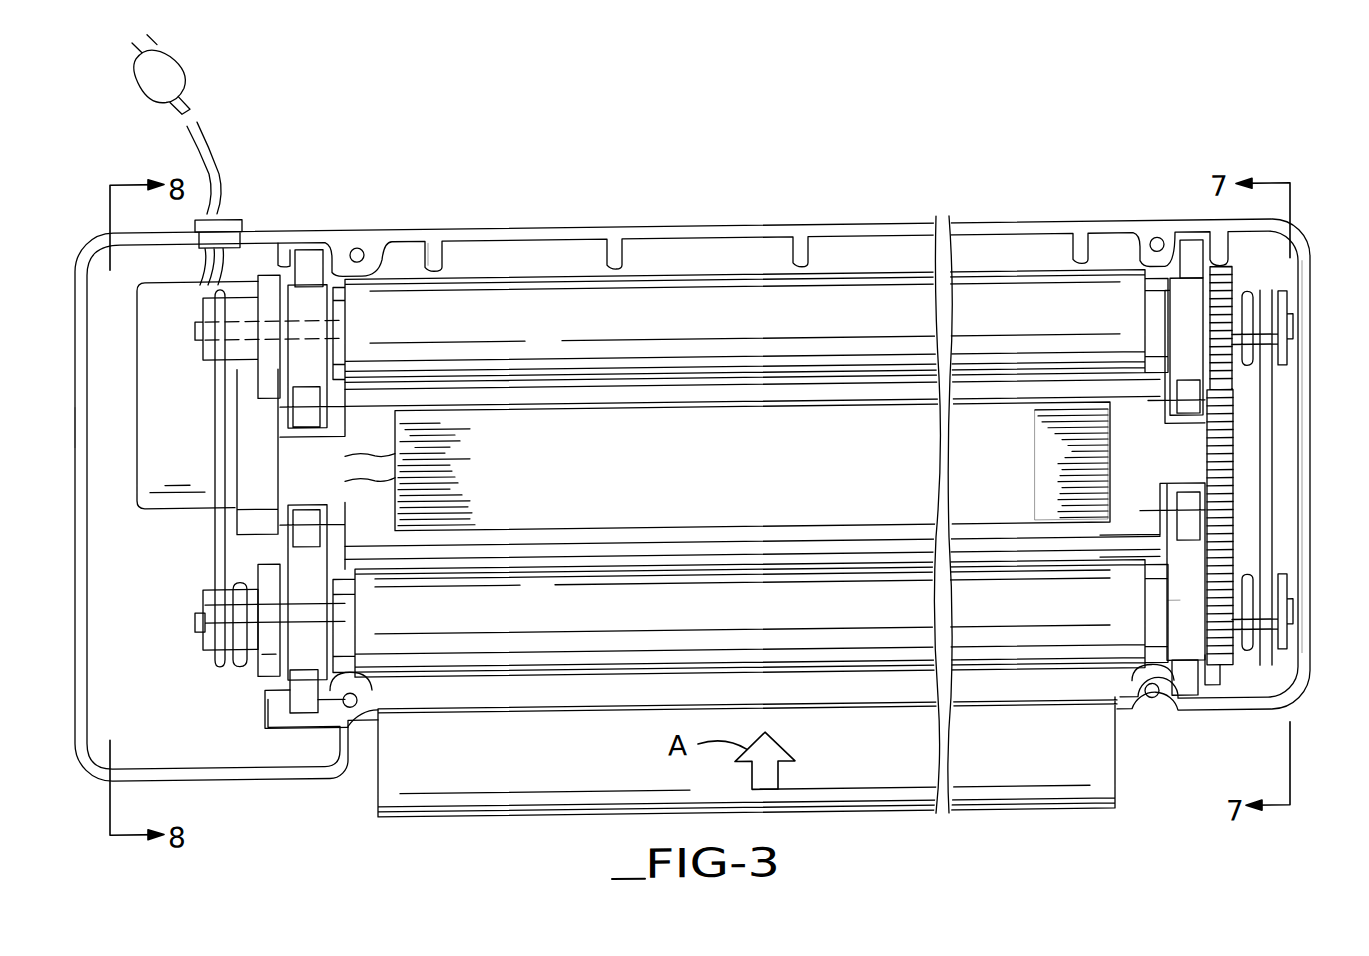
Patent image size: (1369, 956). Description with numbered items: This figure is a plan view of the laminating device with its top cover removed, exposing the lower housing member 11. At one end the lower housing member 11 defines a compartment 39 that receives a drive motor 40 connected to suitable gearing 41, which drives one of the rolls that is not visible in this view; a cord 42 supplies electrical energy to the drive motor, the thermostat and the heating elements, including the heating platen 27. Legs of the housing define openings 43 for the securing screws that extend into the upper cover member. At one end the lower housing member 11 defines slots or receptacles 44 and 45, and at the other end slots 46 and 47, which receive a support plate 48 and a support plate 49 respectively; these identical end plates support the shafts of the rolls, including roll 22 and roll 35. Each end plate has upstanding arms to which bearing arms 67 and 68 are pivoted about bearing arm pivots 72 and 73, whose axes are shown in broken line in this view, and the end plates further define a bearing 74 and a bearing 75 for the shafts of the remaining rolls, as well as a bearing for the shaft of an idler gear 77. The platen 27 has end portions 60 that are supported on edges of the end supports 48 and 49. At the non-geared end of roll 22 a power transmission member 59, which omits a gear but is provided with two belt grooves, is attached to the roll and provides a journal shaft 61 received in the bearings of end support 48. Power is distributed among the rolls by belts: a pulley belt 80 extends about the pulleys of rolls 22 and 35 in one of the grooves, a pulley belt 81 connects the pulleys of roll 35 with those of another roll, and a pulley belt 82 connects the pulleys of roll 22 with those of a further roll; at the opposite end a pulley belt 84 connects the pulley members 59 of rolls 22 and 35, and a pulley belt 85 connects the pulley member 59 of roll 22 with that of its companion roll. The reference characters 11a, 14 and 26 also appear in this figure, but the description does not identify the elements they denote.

The lower housing member 11 is at (840, 228).
The housing tab 11a is at (438, 238).
The tray 14 is at (852, 790).
The roll 22 is at (724, 620).
The brush 26 is at (1149, 472).
The platen 27 is at (748, 485).
The roll 35 is at (751, 325).
The compartment 39 is at (144, 663).
The drive motor 40 is at (176, 387).
The gearing 41 is at (248, 499).
The cord 42 is at (216, 167).
The openings 43 is at (1165, 741).
The slot 44 is at (312, 243).
The slot 45 is at (290, 698).
The slot 46 is at (1190, 244).
The slot 47 is at (1178, 666).
The support plate 48 is at (306, 698).
The support plate 49 is at (1192, 678).
The power transmission member 59 is at (240, 676).
The end portions 60 is at (292, 464).
The journal shaft 61 is at (195, 614).
The bearing arm 67 is at (1185, 618).
The bearing arm 68 is at (1185, 322).
The bearing arm pivot 72 is at (330, 414).
The bearing arm pivot 73 is at (290, 520).
The bearing 74 is at (1312, 446).
The bearing 75 is at (70, 464).
The idler gear 77 is at (1235, 501).
The pulley belt 80 is at (1268, 406).
The pulley belt 81 is at (1250, 301).
The pulley belt 82 is at (1250, 586).
The pulley belt 84 is at (215, 416).
The pulley belt 85 is at (240, 666).